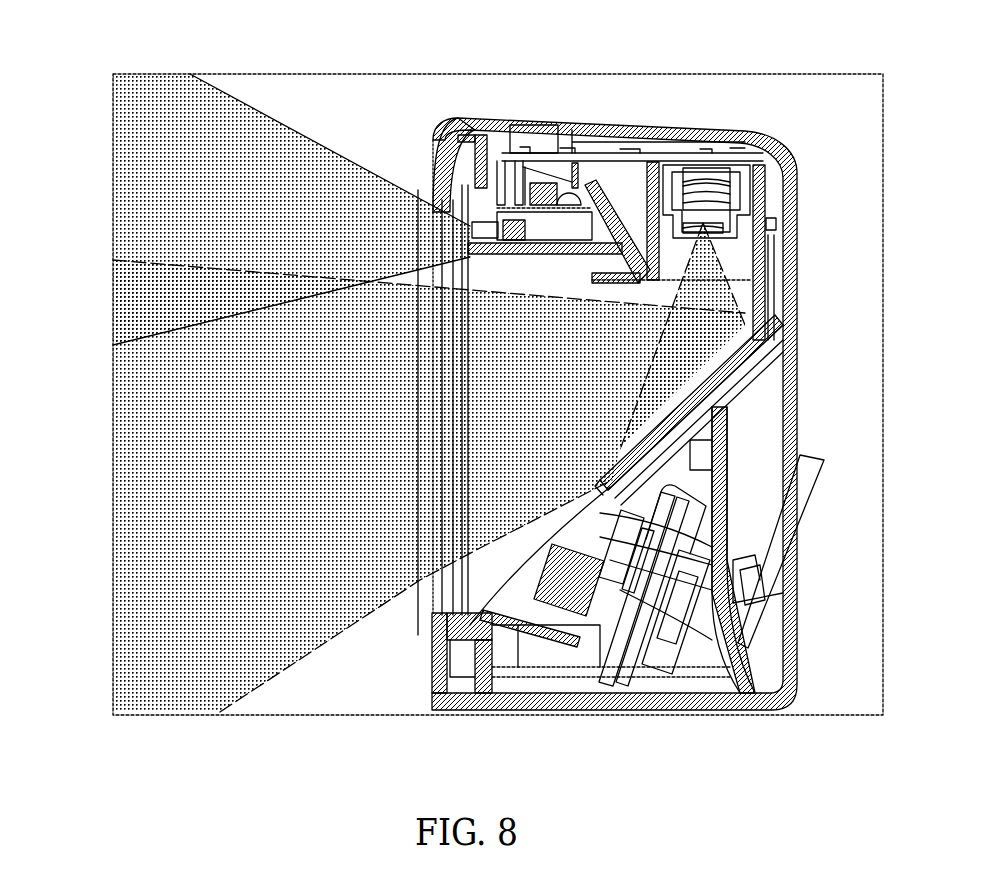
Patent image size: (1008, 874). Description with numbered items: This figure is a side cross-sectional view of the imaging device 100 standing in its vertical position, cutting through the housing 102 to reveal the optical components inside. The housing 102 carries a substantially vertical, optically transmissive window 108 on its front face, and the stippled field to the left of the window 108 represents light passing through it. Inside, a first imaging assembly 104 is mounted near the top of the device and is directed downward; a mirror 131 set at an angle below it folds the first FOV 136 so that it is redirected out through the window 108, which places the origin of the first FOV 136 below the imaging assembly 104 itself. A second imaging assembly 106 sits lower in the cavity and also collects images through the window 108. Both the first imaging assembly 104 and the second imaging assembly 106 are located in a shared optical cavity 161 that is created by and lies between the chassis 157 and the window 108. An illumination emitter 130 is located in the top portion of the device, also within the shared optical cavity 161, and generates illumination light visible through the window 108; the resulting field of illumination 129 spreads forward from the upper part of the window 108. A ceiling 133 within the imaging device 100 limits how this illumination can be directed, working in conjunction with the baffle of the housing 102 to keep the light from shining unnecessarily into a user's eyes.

The imaging device 100 is at (140, 44).
The housing 102 is at (723, 128).
The first imaging assembly 104 is at (738, 197).
The second imaging assembly 106 is at (445, 668).
The window 108 is at (437, 262).
The field of illumination 129 is at (130, 158).
The illumination emitter 130 is at (440, 162).
The mirror 131 is at (753, 370).
The ceiling 133 is at (507, 247).
The first FOV 136 is at (202, 658).
The chassis 157 is at (725, 560).
The shared optical cavity 161 is at (745, 612).